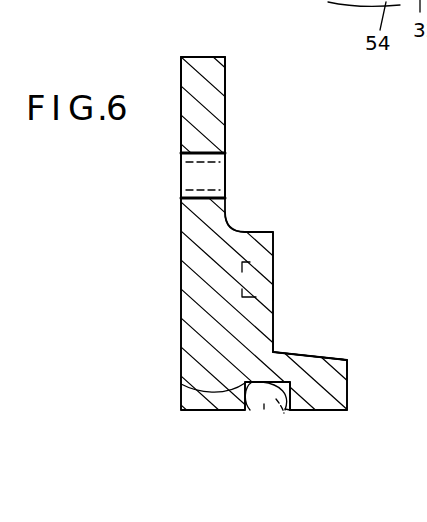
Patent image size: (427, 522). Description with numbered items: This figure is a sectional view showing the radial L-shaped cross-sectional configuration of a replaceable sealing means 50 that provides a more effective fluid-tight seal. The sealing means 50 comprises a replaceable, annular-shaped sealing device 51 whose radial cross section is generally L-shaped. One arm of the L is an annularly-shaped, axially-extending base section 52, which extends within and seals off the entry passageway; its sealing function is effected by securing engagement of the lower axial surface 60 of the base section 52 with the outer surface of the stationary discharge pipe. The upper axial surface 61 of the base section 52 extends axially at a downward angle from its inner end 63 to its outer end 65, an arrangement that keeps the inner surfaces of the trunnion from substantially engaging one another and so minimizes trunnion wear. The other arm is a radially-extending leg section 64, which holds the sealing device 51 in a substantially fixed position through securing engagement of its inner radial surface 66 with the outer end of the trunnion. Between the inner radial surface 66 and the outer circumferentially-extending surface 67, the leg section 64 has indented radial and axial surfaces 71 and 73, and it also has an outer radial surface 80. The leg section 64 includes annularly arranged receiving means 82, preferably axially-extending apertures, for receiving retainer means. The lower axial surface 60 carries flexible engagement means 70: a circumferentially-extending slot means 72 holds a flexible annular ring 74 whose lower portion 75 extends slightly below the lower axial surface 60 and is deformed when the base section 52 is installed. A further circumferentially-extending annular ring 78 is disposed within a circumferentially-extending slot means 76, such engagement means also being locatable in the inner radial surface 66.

The replaceable sealing means 50 is at (348, 278).
The sealing device 51 is at (176, 291).
The base section 52 is at (349, 380).
The lower axial surface 60 is at (328, 412).
The upper axial surface 61 is at (325, 355).
The inner end 63 is at (273, 350).
The radially-extending leg section 64 is at (181, 252).
The outer end 65 is at (348, 360).
The inner radial surface 66 is at (275, 247).
The outer circumferentially-extending surface 67 is at (198, 57).
The flexible engagement means 70 is at (244, 425).
The indented radial surface 71 is at (225, 118).
The circumferentially-extending slot means 72 is at (181, 384).
The indented axial surface 73 is at (263, 232).
The flexible annular ring 74 is at (263, 405).
The lower portion 75 is at (275, 413).
The circumferentially-extending slot means 76 is at (262, 262).
The circumferentially-extending annular ring 78 is at (258, 297).
The outer radial surface 80 is at (181, 108).
The receiving means 82 is at (181, 160).